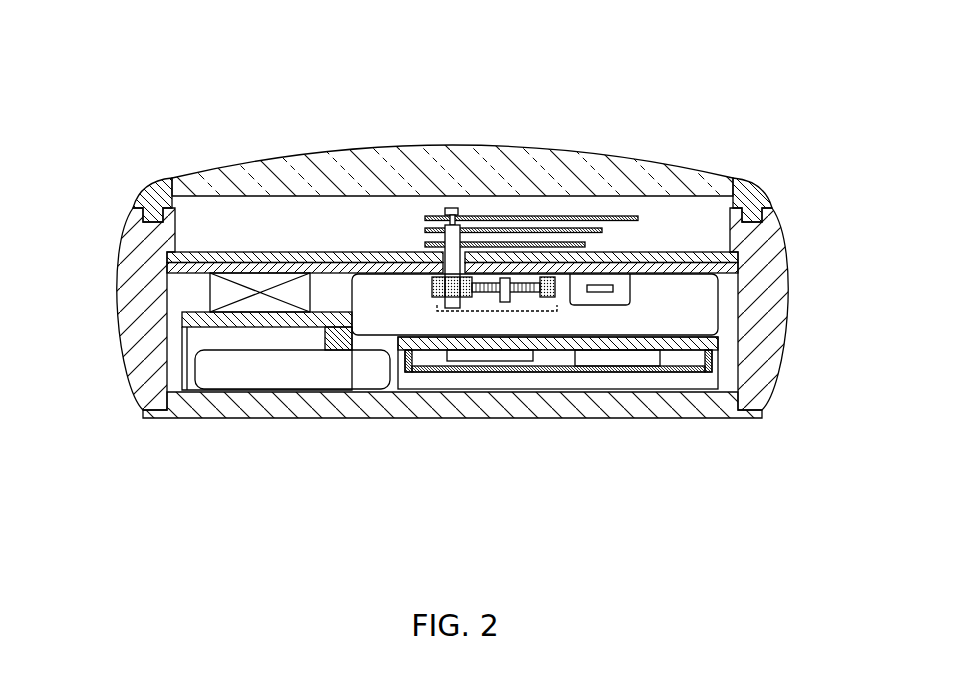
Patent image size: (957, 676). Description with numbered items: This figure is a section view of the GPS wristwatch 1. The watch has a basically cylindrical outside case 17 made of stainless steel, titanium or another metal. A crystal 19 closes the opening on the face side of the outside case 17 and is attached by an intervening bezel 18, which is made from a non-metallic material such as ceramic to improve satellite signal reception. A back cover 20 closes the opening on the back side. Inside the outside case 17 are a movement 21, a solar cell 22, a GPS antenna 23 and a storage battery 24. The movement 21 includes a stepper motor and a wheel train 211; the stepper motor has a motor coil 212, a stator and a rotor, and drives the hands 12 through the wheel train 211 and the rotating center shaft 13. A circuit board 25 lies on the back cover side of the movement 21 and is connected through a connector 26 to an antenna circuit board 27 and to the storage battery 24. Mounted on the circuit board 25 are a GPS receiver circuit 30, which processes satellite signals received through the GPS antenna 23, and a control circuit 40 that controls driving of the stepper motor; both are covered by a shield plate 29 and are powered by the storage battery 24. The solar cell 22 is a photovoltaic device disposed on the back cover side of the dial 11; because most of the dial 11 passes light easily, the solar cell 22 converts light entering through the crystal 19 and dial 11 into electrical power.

The GPS wristwatch 1 is at (690, 79).
The dial 11 is at (233, 252).
The hands 12 is at (533, 215).
The rotating center shaft 13 is at (451, 207).
The outside case 17 is at (130, 212).
The bezel 18 is at (150, 182).
The crystal 19 is at (257, 160).
The back cover 20 is at (218, 412).
The movement 21 is at (720, 327).
The solar cell 22 is at (373, 252).
The GPS antenna 23 is at (259, 278).
The storage battery 24 is at (280, 383).
The circuit board 25 is at (550, 342).
The connector 26 is at (333, 349).
The antenna circuit board 27 is at (183, 322).
The shield plate 29 is at (422, 373).
The GPS receiver circuit 30 is at (483, 363).
The control circuit 40 is at (618, 357).
The wheel train 211 is at (490, 312).
The motor coil 212 is at (629, 287).